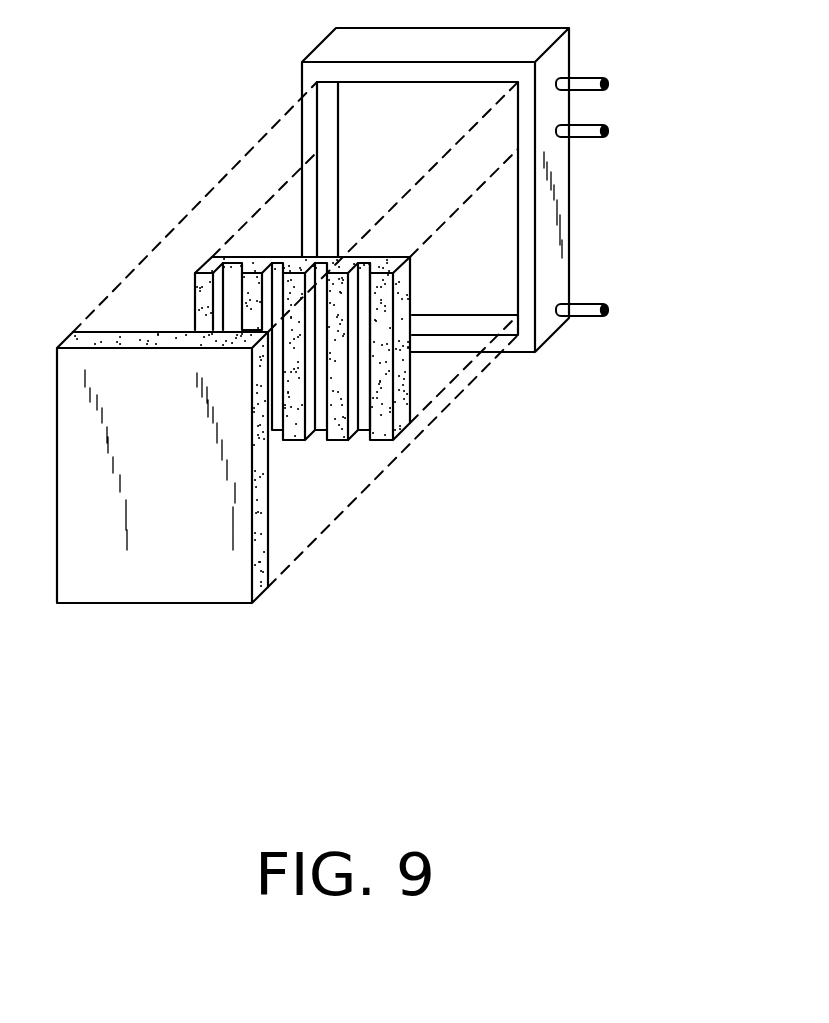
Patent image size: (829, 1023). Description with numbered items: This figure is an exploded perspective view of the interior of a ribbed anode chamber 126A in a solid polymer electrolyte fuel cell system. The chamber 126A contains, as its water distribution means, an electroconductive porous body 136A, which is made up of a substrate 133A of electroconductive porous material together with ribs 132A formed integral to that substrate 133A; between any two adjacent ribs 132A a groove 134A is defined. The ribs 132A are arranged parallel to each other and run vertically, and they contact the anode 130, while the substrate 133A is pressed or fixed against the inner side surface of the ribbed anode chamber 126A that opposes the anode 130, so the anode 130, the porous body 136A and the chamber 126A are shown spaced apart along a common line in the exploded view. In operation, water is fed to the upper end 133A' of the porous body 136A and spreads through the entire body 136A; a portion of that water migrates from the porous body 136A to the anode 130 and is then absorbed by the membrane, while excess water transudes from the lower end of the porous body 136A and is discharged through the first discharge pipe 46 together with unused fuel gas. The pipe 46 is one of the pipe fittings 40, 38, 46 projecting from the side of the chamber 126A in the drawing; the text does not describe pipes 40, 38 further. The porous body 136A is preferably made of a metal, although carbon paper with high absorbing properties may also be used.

The ribbed anode chamber 126A is at (548, 328).
The terminal pin 40 is at (587, 82).
The terminal pin 38 is at (593, 135).
The first discharge pipe 46 is at (588, 312).
The anode 130 is at (200, 570).
The ribs 132A is at (338, 433).
The substrate 133A is at (322, 392).
The upper end 133A' is at (218, 218).
The grooves 134A is at (365, 358).
The electroconductive porous body 136A is at (199, 247).